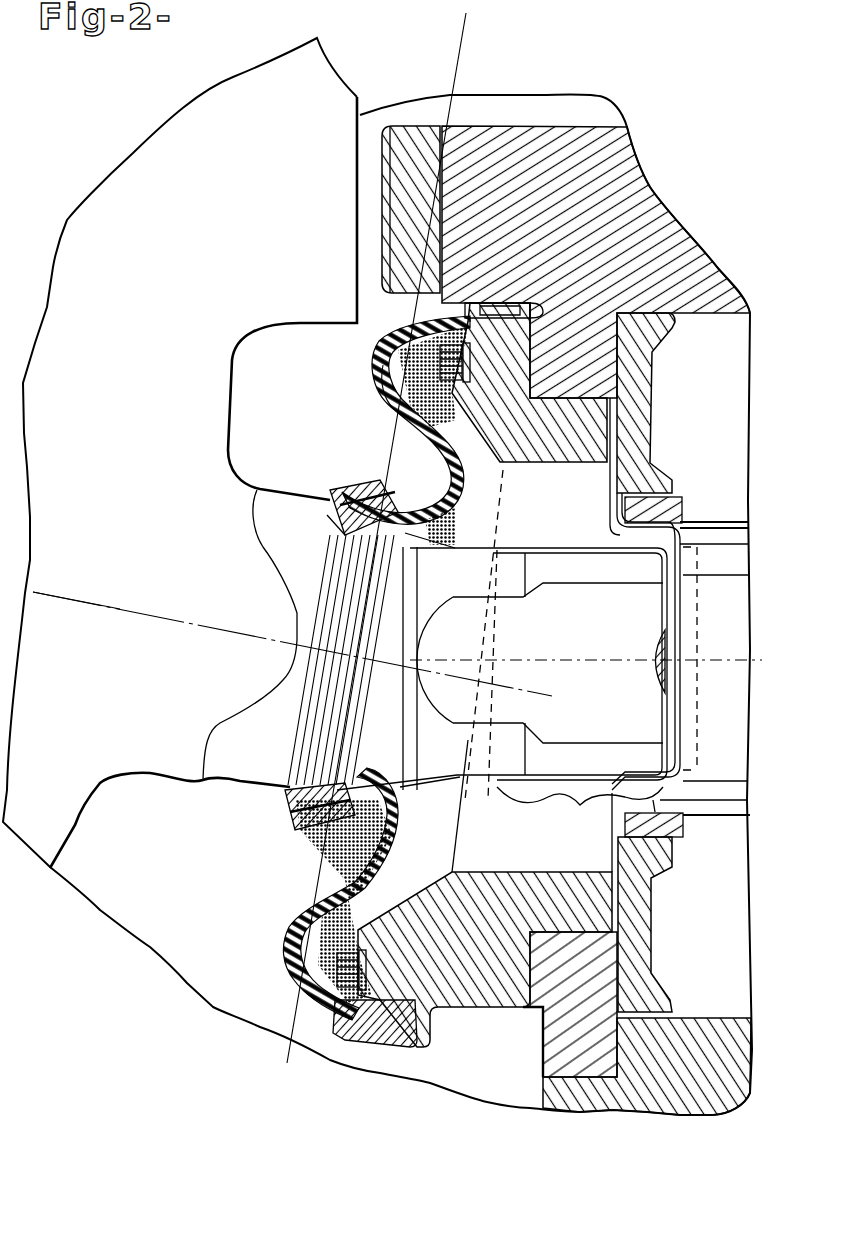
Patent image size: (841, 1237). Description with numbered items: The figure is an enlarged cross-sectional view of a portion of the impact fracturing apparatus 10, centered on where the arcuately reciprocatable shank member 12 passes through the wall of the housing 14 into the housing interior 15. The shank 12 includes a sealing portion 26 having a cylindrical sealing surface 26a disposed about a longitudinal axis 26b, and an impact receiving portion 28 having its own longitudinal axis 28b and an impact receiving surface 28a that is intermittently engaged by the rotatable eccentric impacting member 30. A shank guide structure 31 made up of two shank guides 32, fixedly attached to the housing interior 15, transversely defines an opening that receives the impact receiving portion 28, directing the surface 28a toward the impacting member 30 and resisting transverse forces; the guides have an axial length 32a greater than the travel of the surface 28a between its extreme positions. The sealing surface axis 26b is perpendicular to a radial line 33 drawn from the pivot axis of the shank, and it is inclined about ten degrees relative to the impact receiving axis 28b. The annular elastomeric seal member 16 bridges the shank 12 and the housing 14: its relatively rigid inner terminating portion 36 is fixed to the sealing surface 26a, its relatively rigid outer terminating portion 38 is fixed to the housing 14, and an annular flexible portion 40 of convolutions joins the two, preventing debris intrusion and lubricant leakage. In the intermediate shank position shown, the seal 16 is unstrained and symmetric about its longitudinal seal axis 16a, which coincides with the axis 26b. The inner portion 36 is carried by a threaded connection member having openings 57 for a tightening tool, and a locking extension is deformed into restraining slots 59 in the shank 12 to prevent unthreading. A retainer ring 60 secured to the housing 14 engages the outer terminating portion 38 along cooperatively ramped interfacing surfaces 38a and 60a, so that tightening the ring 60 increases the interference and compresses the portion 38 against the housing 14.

The impact fracturing apparatus 10 is at (222, 784).
The shank member 12 is at (132, 404).
The housing 14 is at (482, 972).
The housing interior 15 is at (432, 856).
The annular seal member 16 is at (377, 338).
The longitudinal seal axis 16a is at (103, 602).
The sealing portion 26 is at (313, 559).
The cylindrical sealing surface 26a is at (330, 513).
The longitudinal axis of the sealing surface 26b is at (243, 632).
The impact receiving portion 28 is at (616, 579).
The impact receiving surface 28a is at (668, 602).
The longitudinal axis of the impact receiving portion 28b is at (592, 658).
The rotatable eccentric impacting member 30 is at (723, 748).
The shank guide structure 31 is at (504, 756).
The shank guide 32 is at (580, 824).
The axial length of the shank guides 32a is at (604, 822).
The radial line 33 is at (468, 30).
The inner terminating portion 36 is at (346, 500).
The outer terminating portion 38 is at (498, 322).
The ramped interfacing surface of the outer terminating portion 38a is at (508, 316).
The annular flexible portion 40 is at (378, 398).
The openings 57 is at (290, 826).
The restraining slots 59 is at (302, 832).
The retainer ring 60 is at (493, 316).
The ramped interfacing surface of the retainer ring 60a is at (478, 317).